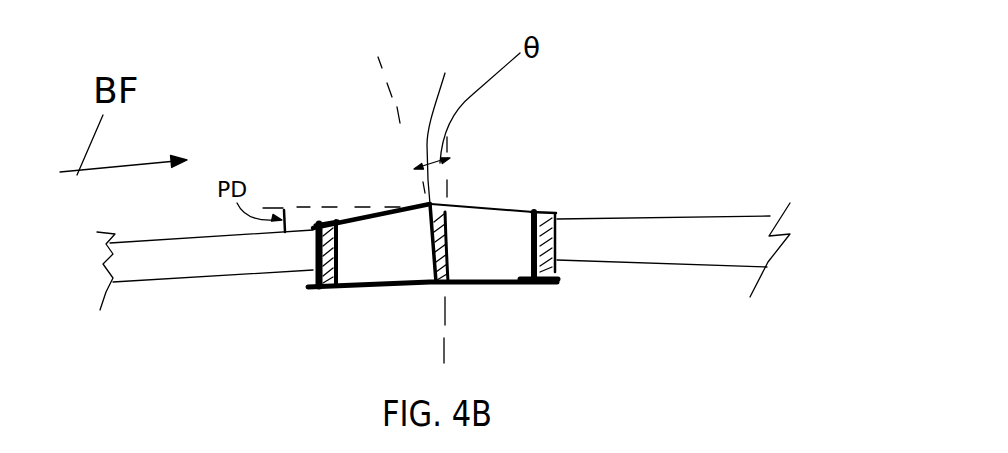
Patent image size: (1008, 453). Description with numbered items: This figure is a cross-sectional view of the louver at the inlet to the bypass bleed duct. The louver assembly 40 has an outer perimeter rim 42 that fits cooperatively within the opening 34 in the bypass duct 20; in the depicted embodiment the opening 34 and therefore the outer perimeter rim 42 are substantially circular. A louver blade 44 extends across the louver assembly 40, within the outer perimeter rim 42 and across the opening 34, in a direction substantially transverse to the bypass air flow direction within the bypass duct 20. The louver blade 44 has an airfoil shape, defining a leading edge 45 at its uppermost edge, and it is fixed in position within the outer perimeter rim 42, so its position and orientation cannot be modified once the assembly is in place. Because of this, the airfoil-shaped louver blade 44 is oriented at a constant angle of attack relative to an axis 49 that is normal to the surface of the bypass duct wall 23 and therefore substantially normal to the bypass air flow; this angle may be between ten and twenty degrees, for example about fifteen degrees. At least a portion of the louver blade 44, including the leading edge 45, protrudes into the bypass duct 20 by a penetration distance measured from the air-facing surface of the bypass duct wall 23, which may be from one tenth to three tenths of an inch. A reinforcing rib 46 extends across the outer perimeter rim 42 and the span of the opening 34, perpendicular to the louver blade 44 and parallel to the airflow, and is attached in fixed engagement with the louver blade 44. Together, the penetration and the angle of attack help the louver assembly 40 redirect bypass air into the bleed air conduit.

The bypass duct 20 is at (774, 188).
The bypass duct wall 23 is at (707, 230).
The opening 34 is at (343, 232).
The louver assembly 40 is at (545, 121).
The outer perimeter rim 42 is at (537, 212).
The louver blade 44 is at (430, 231).
The leading edge 45 is at (458, 127).
The reinforcing rib 46 is at (469, 223).
The axis 49 is at (445, 313).